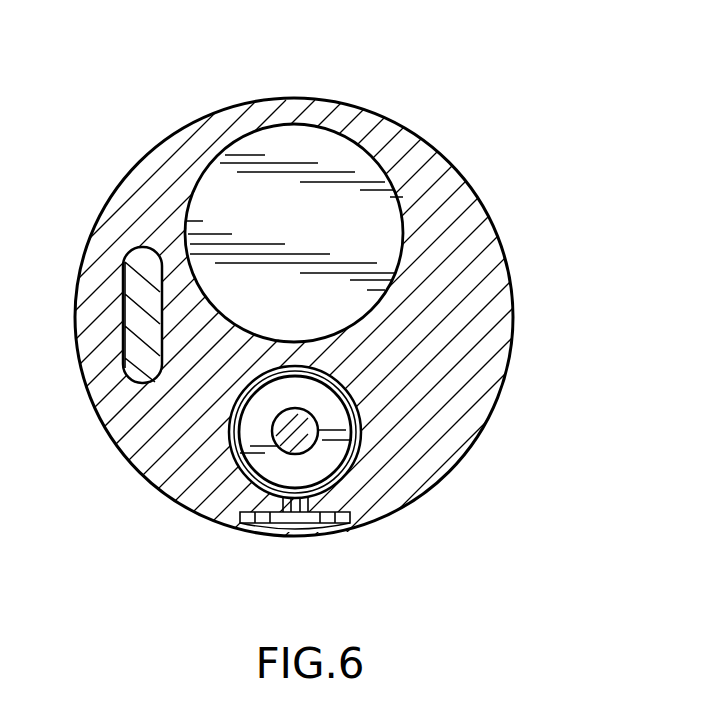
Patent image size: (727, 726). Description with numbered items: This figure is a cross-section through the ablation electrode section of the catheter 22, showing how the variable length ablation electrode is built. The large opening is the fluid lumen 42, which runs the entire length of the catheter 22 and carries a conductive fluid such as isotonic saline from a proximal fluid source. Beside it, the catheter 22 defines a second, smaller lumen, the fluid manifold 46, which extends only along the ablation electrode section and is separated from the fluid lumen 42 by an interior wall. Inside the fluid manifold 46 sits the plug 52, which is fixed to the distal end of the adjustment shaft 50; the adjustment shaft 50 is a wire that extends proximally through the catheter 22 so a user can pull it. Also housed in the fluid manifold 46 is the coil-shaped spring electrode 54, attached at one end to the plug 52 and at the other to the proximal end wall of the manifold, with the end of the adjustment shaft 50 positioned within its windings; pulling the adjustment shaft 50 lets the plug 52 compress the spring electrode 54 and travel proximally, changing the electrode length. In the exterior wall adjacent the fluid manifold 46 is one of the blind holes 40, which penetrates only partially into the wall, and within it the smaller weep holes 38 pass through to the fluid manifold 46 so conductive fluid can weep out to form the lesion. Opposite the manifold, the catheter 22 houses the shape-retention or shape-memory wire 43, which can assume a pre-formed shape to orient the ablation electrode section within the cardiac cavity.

The catheter 22 is at (212, 133).
The fluid lumen 42 is at (368, 170).
The shape-retention or shape-memory wire 43 is at (127, 287).
The fluid manifold 46 is at (364, 395).
The adjustment shaft 50 is at (303, 417).
The plug 52 is at (333, 443).
The spring electrode 54 is at (282, 500).
The blind holes 40 is at (309, 524).
The weep holes 38 is at (298, 522).